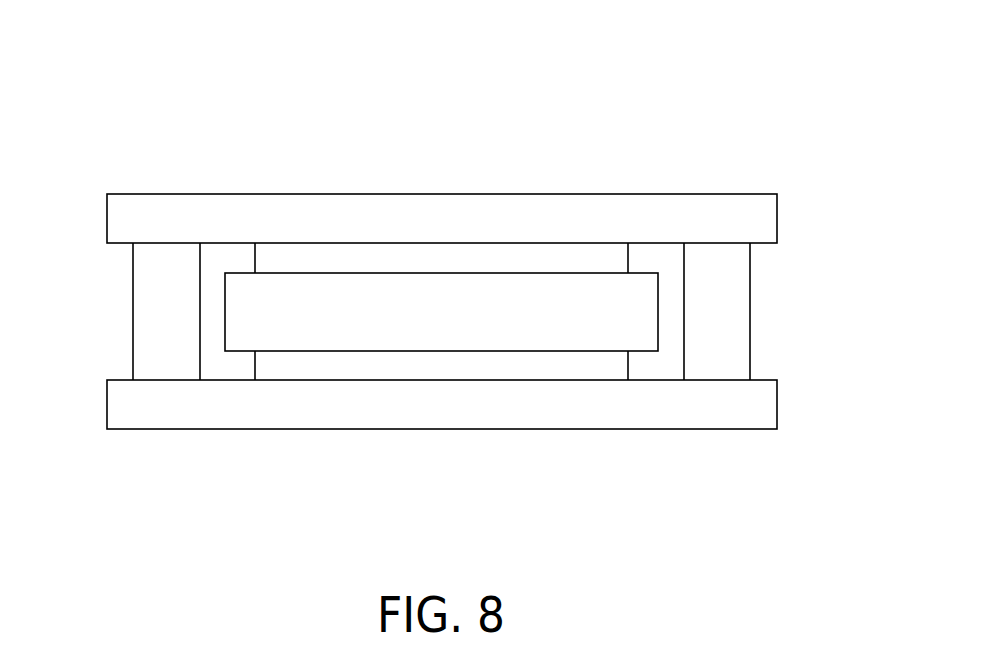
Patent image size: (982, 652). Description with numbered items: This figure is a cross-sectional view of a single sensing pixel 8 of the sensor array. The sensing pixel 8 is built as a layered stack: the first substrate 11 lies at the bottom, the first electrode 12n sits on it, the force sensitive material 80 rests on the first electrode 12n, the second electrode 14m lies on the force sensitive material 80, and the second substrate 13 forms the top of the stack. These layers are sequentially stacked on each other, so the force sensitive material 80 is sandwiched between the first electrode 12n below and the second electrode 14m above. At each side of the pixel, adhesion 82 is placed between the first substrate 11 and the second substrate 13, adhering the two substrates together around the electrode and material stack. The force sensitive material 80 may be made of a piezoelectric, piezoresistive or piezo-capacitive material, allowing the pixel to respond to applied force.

The sensing pixel 8 is at (710, 136).
The second substrate 13 is at (435, 212).
The first substrate 11 is at (440, 403).
The adhesion 82 is at (170, 312).
The second electrode 14m is at (323, 257).
The first electrode 12n is at (321, 367).
The force sensitive material 80 is at (457, 323).